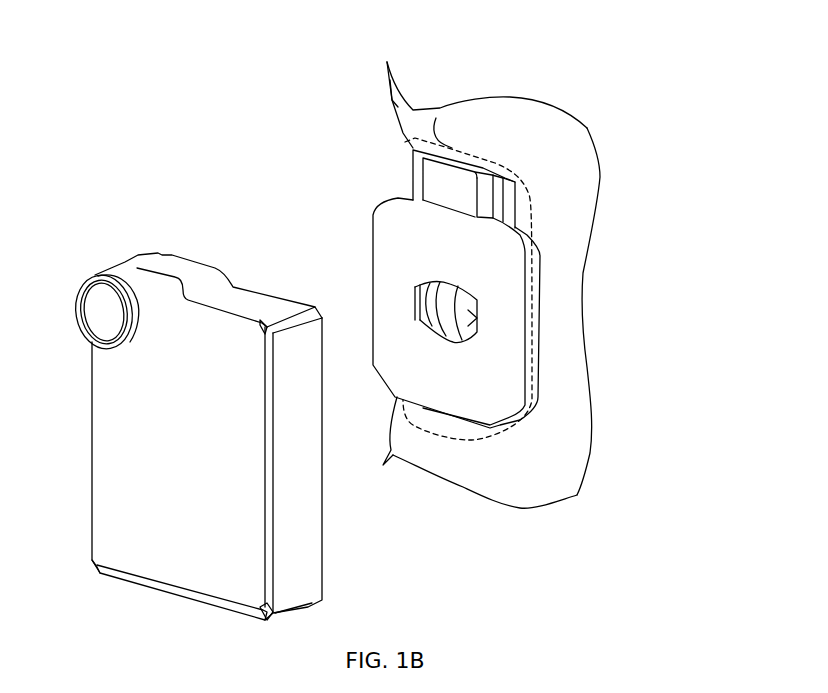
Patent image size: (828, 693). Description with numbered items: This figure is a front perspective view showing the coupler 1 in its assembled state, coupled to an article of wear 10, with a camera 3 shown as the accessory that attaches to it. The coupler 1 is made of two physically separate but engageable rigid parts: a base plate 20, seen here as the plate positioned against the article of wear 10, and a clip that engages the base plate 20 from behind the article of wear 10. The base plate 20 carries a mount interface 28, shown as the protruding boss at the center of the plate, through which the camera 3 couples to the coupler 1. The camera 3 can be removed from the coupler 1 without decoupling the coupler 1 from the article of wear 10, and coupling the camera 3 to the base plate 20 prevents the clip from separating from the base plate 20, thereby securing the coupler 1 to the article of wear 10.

The coupler 1 is at (300, 115).
The camera 3 is at (148, 253).
The article of wear 10 is at (588, 373).
The base plate 20 is at (407, 198).
The mount interface 28 is at (477, 318).